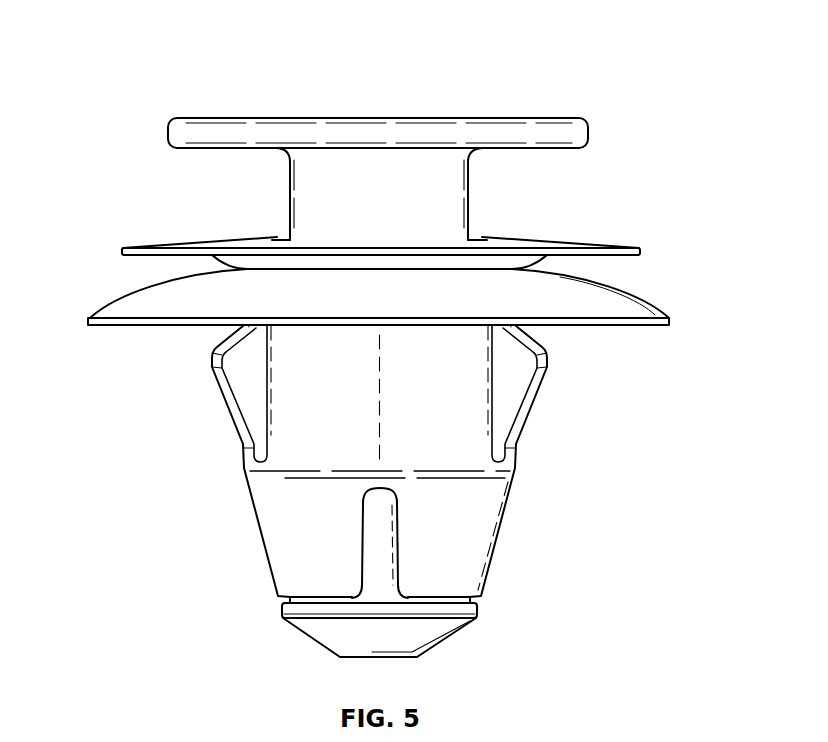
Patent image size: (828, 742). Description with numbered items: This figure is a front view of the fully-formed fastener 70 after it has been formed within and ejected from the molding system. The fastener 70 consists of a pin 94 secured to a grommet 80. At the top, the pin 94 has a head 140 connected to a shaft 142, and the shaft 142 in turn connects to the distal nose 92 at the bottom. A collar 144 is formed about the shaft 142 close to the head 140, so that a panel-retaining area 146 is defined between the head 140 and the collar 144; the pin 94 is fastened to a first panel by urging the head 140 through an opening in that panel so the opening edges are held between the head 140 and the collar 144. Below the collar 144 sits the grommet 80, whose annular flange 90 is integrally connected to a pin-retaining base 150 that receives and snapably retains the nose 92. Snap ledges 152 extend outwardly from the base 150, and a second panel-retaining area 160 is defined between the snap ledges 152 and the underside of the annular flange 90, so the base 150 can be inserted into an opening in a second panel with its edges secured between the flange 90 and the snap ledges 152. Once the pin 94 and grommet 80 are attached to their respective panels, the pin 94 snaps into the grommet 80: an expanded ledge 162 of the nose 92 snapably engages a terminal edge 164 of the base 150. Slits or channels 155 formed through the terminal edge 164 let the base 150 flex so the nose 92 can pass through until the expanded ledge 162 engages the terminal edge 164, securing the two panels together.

The fastener 70 is at (150, 71).
The pin 94 is at (551, 81).
The head 140 is at (241, 117).
The shaft 142 is at (470, 205).
The panel-retaining area 146 is at (272, 183).
The collar 144 is at (122, 250).
The grommet 80 is at (602, 300).
The annular flange 90 is at (585, 312).
The panel-retaining area 160 is at (216, 334).
The snap ledges 152 is at (212, 375).
The pin-retaining base 150 is at (247, 493).
The slits or channels 155 is at (375, 538).
The terminal edge 164 is at (477, 598).
The expanded ledge 162 is at (477, 621).
The distal nose 92 is at (283, 620).